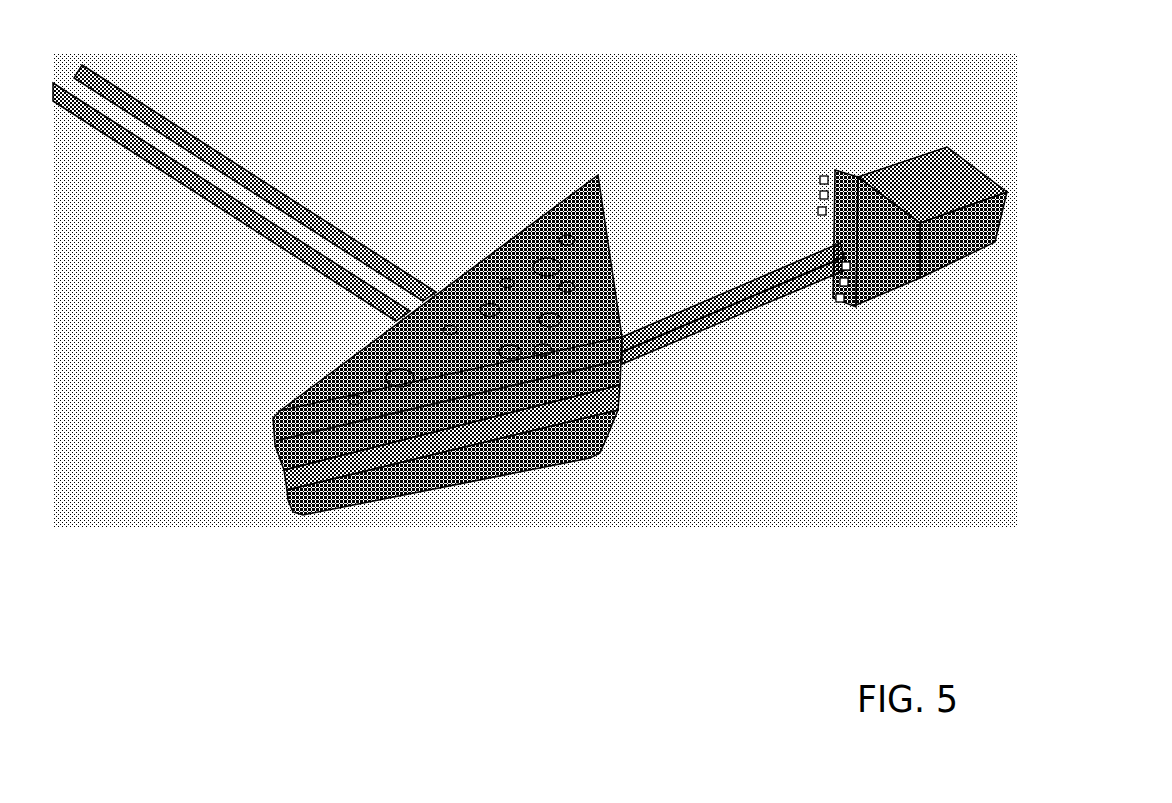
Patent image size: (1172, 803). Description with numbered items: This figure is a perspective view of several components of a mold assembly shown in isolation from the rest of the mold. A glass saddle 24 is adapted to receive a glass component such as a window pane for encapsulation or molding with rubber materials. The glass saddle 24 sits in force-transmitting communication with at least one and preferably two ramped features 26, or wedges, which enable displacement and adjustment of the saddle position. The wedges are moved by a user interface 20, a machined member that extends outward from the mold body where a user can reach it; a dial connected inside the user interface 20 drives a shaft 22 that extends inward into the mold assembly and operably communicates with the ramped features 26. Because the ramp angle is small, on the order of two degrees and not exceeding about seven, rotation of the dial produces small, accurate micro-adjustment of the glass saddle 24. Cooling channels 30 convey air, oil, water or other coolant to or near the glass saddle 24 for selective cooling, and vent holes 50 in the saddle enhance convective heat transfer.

The user interface 20 is at (983, 253).
The shaft 22 is at (753, 331).
The glass saddle 24 is at (454, 406).
The ramped feature 26 is at (565, 436).
The cooling channels 30 is at (217, 168).
The vent holes 50 is at (387, 405).